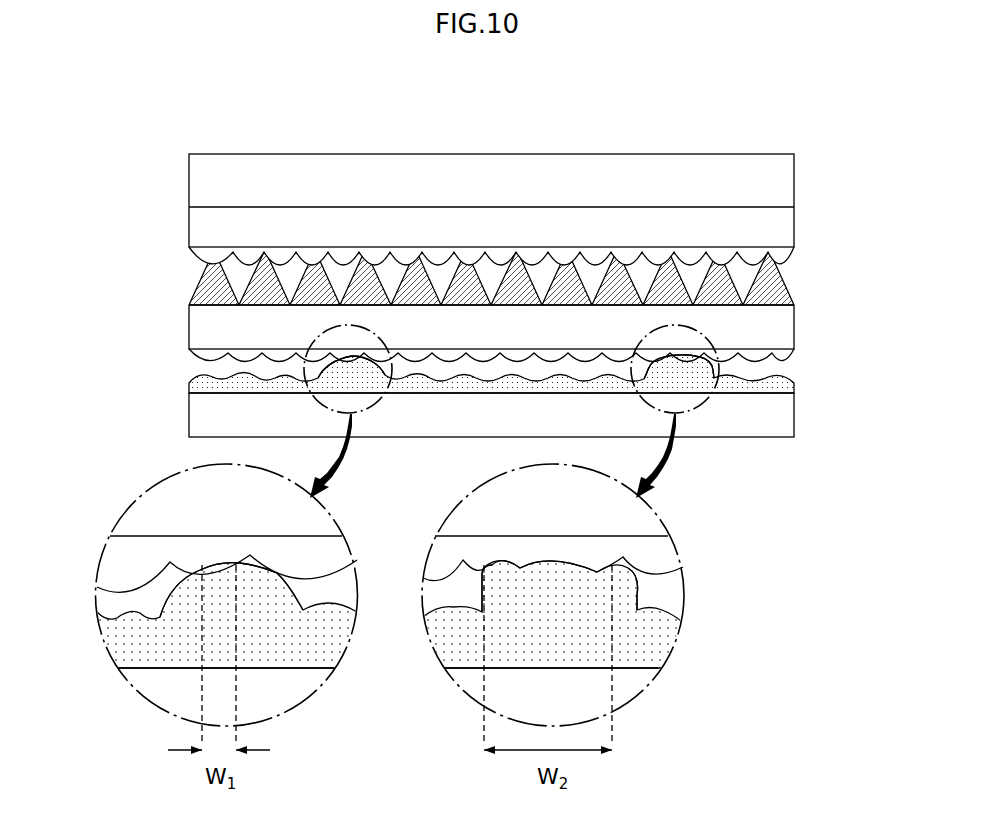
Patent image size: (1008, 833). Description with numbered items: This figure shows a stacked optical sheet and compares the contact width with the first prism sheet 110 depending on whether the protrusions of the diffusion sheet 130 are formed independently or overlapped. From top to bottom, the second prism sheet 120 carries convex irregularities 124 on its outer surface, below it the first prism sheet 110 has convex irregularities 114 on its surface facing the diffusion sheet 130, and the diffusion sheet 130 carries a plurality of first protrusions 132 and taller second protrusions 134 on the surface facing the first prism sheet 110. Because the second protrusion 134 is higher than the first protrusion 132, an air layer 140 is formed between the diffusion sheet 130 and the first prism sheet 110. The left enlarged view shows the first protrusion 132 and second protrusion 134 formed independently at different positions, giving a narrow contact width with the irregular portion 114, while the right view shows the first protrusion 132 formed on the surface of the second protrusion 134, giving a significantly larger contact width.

The first prism sheet 110 is at (189, 330).
The convex irregularities of the first prism sheet 114 is at (794, 352).
The second prism sheet 120 is at (189, 187).
The convex irregularities of the second prism sheet 124 is at (794, 255).
The diffusion sheet 130 is at (794, 412).
The first protrusion 132 is at (794, 378).
The second protrusion 134 is at (360, 366).
The air layer 140 is at (438, 368).